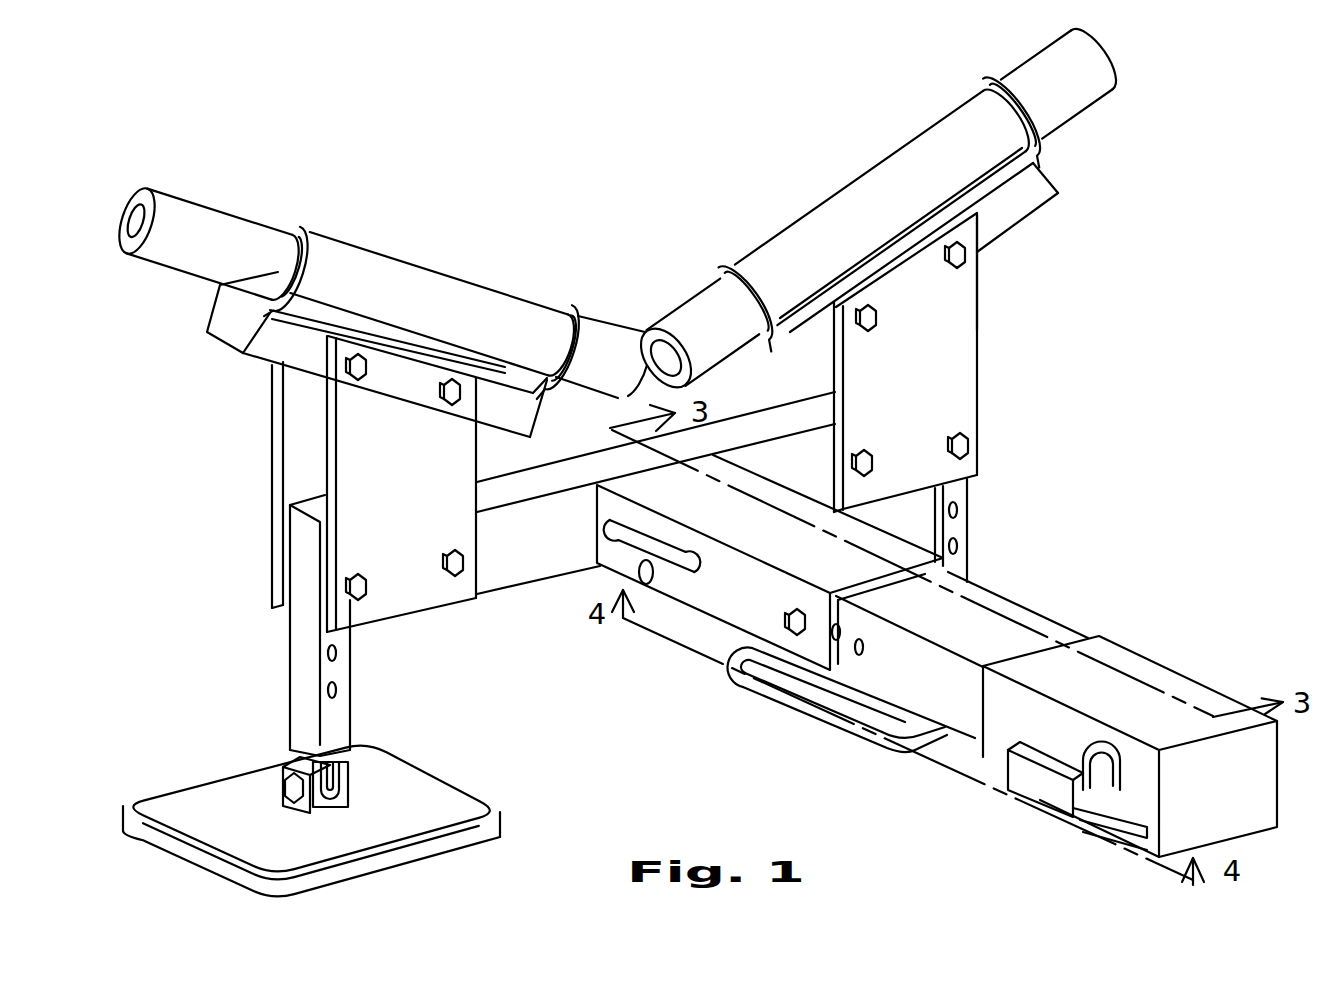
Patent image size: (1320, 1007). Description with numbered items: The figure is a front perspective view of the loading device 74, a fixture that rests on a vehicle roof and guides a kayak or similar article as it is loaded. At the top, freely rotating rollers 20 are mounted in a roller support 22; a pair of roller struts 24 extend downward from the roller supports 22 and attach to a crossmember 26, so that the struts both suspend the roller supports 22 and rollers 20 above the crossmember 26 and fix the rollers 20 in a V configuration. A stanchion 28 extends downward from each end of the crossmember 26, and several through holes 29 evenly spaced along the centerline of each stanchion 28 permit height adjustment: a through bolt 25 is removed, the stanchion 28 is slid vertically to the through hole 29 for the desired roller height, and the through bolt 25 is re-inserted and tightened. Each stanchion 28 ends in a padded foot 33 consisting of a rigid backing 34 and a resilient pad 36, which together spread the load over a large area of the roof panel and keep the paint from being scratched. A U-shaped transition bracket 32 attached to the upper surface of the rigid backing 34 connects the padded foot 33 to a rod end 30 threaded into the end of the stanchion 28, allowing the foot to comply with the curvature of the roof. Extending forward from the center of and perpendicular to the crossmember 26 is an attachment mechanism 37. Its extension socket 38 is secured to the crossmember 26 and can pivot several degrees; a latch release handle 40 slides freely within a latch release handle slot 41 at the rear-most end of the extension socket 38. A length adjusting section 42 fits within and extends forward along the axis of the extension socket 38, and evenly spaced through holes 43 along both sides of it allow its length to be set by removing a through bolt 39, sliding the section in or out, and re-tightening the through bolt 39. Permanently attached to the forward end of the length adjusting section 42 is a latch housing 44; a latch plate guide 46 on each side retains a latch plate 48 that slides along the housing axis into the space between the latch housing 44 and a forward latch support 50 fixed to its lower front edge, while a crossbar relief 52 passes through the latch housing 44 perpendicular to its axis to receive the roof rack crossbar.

The rollers 20 is at (618, 210).
The roller support 22 is at (210, 316).
The roller struts 24 is at (623, 422).
The through bolt 25 is at (675, 421).
The crossmember 26 is at (538, 595).
The stanchion 28 is at (1083, 450).
The through holes 29 is at (650, 594).
The rod end 30 is at (343, 782).
The transition bracket 32 is at (279, 771).
The padded foot 33 is at (526, 630).
The rigid backing 34 is at (463, 805).
The resilient pad 36 is at (340, 863).
The attachment mechanism 37 is at (910, 670).
The extension socket 38 is at (881, 520).
The through bolt 39 is at (767, 603).
The latch release handle 40 is at (640, 574).
The latch release handle slot 41 is at (615, 529).
The length adjusting section 42 is at (967, 619).
The through holes 43 is at (884, 631).
The latch housing 44 is at (1108, 655).
The latch plate guide 46 is at (1013, 777).
The latch plate 48 is at (1017, 844).
The forward latch support 50 is at (1130, 838).
The crossbar relief 52 is at (1060, 738).
The loading device 74 is at (1051, 272).